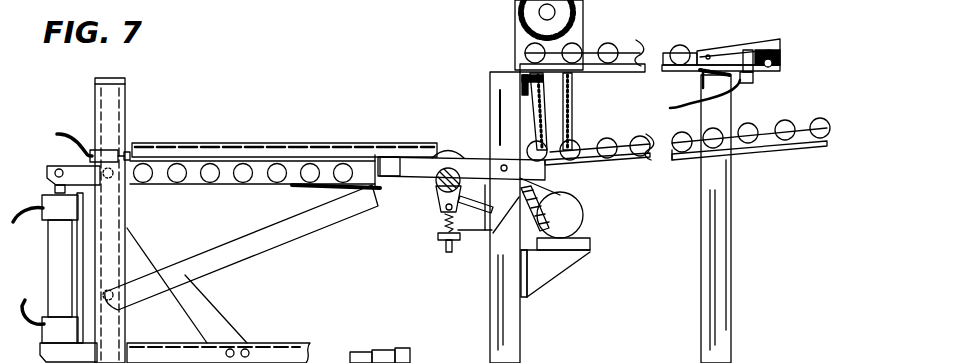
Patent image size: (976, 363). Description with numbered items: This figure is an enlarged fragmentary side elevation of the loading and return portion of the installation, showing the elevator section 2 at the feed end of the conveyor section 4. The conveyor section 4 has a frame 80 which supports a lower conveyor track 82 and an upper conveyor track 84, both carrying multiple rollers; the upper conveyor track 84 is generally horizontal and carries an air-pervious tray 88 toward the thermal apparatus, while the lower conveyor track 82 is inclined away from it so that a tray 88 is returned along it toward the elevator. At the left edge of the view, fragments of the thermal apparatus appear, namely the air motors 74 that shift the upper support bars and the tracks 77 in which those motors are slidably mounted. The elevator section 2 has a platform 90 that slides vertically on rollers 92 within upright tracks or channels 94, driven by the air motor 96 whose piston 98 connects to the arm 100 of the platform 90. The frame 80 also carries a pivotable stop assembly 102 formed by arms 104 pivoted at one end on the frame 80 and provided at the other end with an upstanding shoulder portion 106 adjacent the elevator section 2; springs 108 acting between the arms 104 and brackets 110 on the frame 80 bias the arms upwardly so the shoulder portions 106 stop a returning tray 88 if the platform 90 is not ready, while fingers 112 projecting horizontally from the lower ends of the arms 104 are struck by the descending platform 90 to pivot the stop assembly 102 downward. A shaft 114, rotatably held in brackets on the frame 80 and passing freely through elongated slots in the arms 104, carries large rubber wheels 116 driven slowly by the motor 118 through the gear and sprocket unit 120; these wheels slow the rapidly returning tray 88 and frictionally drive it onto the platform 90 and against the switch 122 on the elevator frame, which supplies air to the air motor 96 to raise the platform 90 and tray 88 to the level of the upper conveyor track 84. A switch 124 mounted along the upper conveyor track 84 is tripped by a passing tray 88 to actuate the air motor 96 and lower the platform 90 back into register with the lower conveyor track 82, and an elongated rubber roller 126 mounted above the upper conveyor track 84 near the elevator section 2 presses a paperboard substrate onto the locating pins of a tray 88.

The elevator section 2 is at (323, 212).
The conveyor section 4 is at (695, 50).
The air motors 74 is at (405, 356).
The tracks 77 is at (380, 352).
The frame 80 is at (523, 331).
The lower conveyor track 82 is at (764, 127).
The upper conveyor track 84 is at (626, 45).
The tray 88 is at (266, 143).
The platform 90 is at (233, 188).
The rollers 92 is at (123, 167).
The upright tracks or channels 94 is at (125, 103).
The air motor 96 is at (48, 264).
The piston 98 is at (55, 187).
The arm 100 is at (54, 160).
The stop assembly 102 is at (392, 198).
The arms 104 is at (480, 157).
The shoulder portion 106 is at (378, 156).
The springs 108 is at (466, 238).
The brackets 110 is at (458, 243).
The fingers 112 is at (378, 192).
The shaft 114 is at (428, 200).
The rubber wheels 116 is at (455, 156).
The motor 118 is at (586, 232).
The gear and sprocket unit 120 is at (530, 254).
The switch 122 is at (90, 151).
The switch 124 is at (771, 61).
The rubber roller 126 is at (521, 14).